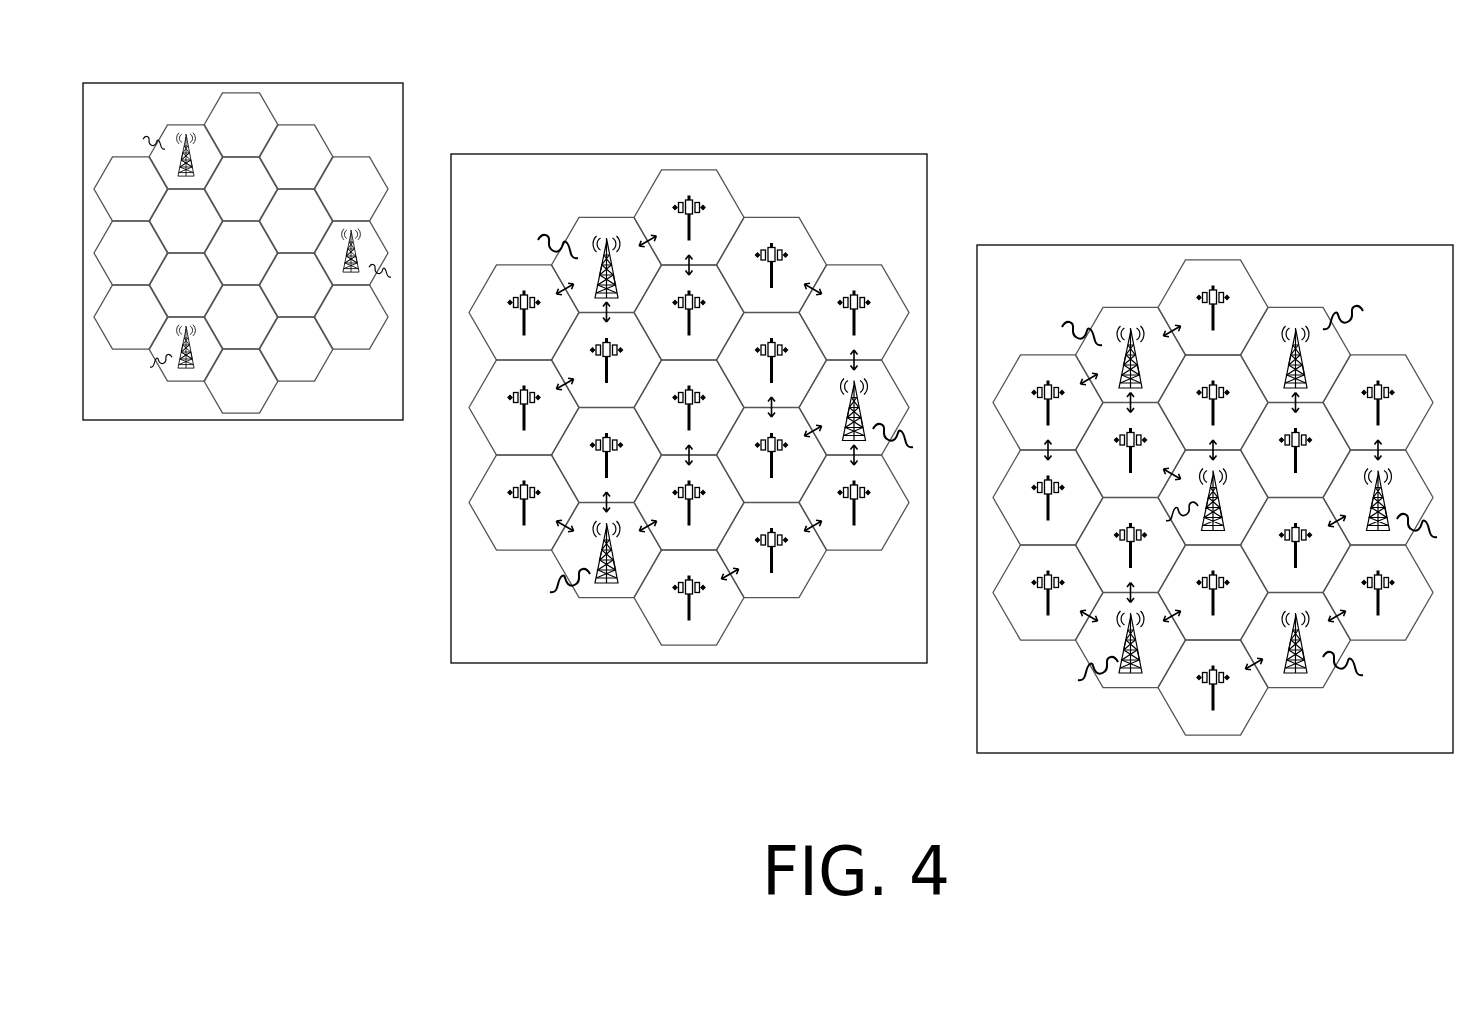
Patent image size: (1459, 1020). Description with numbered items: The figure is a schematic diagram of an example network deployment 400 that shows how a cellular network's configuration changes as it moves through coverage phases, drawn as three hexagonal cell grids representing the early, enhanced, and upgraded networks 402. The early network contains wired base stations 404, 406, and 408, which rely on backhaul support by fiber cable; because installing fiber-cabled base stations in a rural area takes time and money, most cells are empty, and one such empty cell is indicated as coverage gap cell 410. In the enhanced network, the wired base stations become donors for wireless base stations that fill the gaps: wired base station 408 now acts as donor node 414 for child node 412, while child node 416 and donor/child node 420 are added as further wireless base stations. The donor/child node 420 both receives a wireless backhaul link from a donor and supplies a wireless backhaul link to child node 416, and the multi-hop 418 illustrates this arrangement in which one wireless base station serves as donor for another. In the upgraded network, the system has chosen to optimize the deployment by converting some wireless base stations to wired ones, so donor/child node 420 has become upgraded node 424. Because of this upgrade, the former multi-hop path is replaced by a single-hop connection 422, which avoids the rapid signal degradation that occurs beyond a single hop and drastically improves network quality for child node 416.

The network deployment 400 is at (1346, 68).
The network 402 is at (383, 83).
The wired base station 404 is at (220, 141).
The wired base station 406 is at (352, 219).
The wired base station 408 is at (193, 386).
The coverage gap cell 410 is at (304, 386).
The child node 412 is at (482, 525).
The donor node 414 is at (564, 573).
The child node 416 is at (680, 650).
The multi-hop connection 418 is at (732, 590).
The donor/child node 420 is at (773, 603).
The single-hop connection 422 is at (1257, 678).
The upgraded node 424 is at (1293, 691).